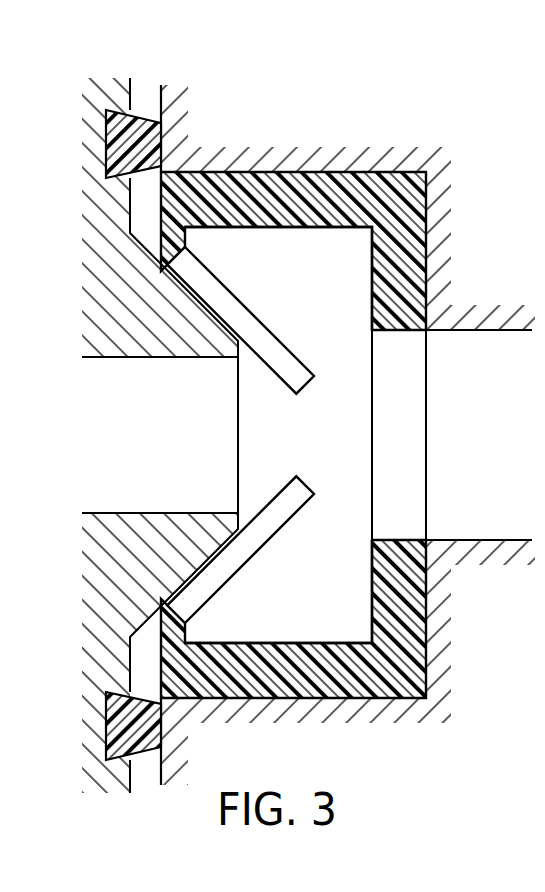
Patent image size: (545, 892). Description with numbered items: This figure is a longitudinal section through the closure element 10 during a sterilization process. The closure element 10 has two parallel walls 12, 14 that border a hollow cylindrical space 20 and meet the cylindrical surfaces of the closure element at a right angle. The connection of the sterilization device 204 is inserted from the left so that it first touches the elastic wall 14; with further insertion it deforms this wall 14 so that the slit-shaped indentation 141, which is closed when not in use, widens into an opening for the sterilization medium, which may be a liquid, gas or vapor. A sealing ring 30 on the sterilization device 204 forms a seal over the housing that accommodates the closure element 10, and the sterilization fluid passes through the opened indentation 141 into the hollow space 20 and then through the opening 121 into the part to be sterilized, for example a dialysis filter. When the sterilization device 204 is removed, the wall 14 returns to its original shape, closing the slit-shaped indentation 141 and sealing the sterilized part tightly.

The closure element 10 is at (345, 166).
The wall 12 is at (416, 263).
The wall 14 is at (228, 284).
The hollow cylindrical space 20 is at (336, 304).
The sealing ring 30 is at (142, 733).
The opening 121 is at (410, 423).
The slit-shaped indentation 141 is at (311, 424).
The sterilization device 204 is at (180, 452).